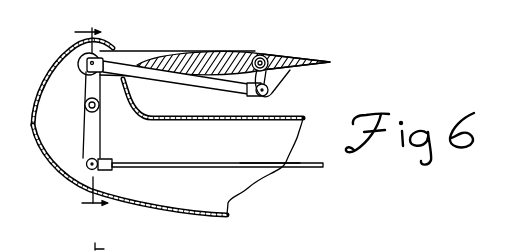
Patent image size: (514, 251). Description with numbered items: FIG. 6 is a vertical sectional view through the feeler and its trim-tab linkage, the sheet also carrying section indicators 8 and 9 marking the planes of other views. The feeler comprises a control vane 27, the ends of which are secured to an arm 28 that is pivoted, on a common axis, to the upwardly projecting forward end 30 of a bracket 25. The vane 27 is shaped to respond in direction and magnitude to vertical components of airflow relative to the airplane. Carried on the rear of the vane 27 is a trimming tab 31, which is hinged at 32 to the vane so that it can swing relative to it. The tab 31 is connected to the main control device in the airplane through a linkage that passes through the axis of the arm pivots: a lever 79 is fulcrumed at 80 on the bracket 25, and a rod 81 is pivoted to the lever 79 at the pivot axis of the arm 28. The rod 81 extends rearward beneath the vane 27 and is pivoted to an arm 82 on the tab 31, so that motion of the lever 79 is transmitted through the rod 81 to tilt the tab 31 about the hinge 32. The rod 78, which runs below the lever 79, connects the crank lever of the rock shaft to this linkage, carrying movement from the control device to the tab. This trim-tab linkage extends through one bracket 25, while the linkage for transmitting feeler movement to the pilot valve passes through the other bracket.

The section line 8- 8 is at (91, 117).
The section line 9- 9 is at (93, 240).
The bracket 25 is at (180, 213).
The control vane 27 is at (200, 51).
The arm 28 is at (134, 51).
The upwardly projecting forward end 30 is at (50, 70).
The trimming tab 31 is at (294, 57).
The hinge 32 is at (257, 59).
The rod 78 is at (248, 162).
The lever 79 is at (100, 146).
The fulcrum 80 is at (85, 104).
The rod 81 is at (213, 88).
The arm 82 is at (280, 77).